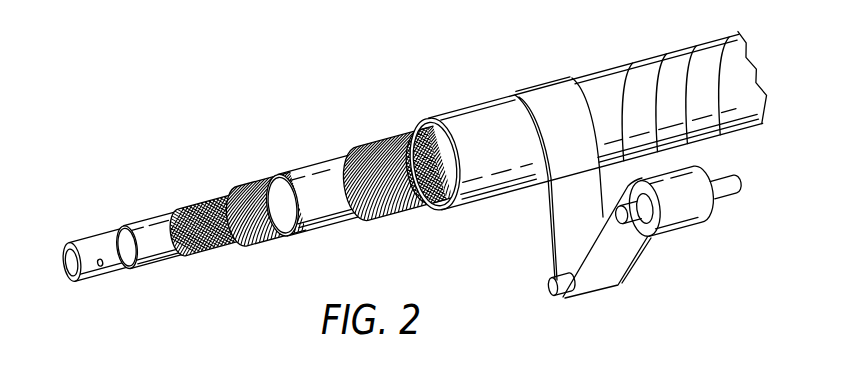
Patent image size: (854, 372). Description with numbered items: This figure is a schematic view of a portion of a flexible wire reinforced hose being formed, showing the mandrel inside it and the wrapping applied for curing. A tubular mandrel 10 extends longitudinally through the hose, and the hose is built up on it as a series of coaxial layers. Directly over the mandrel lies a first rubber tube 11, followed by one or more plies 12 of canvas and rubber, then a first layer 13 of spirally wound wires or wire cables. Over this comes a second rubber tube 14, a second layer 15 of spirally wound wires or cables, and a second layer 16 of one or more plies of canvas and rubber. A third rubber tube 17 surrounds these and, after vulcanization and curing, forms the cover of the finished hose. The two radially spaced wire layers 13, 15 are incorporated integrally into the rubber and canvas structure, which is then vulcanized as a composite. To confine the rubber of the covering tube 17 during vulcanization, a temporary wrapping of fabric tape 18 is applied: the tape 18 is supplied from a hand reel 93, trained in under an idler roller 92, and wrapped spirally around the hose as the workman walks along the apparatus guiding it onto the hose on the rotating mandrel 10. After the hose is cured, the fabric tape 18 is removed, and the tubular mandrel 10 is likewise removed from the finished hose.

The tubular mandrel 10 is at (113, 268).
The first rubber tube 11 is at (163, 258).
The plies of canvas and rubber 12 is at (207, 249).
The first layer of spirally wound wires 13 is at (267, 239).
The second rubber tube 14 is at (320, 226).
The second layer of spirally wound wires 15 is at (374, 210).
The second layer of plies of canvas and rubber 16 is at (427, 203).
The third rubber tube 17 is at (498, 188).
The fabric tape 18 is at (587, 79).
The idler roller 92 is at (550, 298).
The hand reel 93 is at (719, 196).